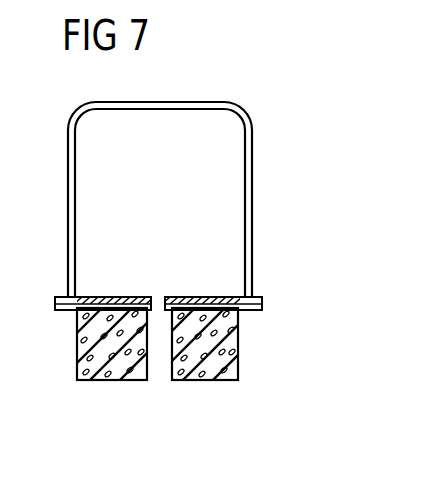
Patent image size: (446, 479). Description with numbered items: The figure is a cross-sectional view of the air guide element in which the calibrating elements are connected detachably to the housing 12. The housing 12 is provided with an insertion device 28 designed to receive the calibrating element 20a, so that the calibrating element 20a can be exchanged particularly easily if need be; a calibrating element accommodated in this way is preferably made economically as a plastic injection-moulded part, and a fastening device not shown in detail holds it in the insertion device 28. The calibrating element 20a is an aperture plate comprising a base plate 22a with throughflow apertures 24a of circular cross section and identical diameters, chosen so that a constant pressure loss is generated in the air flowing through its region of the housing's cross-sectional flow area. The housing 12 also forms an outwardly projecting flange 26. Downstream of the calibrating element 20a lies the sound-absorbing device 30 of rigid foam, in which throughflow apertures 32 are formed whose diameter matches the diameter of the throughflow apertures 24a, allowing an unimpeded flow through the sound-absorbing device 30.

The housing 12 is at (252, 205).
The outwardly projecting flange 26 is at (262, 307).
The base plate 22a is at (88, 296).
The insertion device 28 is at (215, 296).
The calibrating element 20a is at (120, 296).
The throughflow apertures 24a is at (160, 295).
The sound-absorbing device 30 is at (230, 343).
The throughflow apertures 32 is at (158, 367).